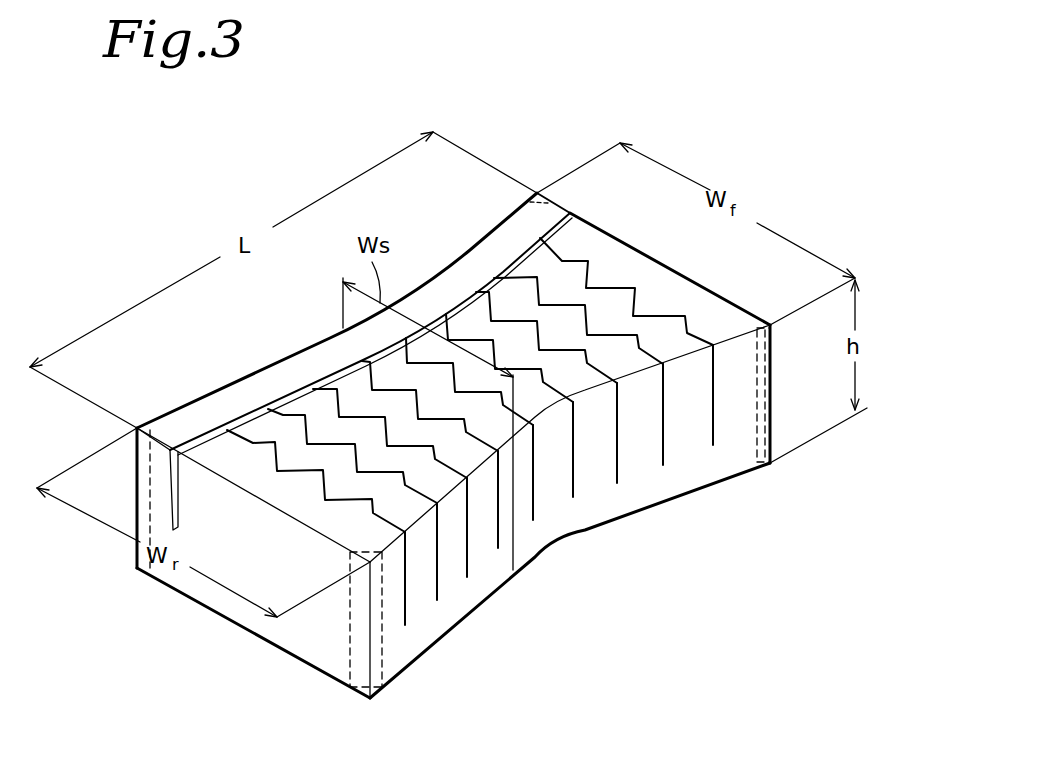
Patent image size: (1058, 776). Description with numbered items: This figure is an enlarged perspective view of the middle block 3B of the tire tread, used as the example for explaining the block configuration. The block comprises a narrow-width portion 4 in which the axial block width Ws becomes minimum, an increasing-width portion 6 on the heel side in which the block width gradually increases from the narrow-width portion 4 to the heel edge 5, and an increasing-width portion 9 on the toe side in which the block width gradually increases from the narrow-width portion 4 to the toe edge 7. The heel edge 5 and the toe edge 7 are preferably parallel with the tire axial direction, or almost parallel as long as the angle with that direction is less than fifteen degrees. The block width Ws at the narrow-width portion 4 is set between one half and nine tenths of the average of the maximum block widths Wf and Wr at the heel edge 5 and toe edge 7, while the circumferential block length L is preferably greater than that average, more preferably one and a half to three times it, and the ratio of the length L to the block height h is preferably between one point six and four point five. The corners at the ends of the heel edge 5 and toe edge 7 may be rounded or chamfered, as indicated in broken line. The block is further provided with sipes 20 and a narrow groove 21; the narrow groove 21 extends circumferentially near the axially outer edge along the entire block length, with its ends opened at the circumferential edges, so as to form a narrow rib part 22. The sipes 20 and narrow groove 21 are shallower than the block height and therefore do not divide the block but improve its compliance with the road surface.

The middle block 3B is at (165, 347).
The narrow-width portion 4 is at (558, 558).
The heel edge 5 is at (718, 293).
The increasing-width portion on the block heel-side 6 is at (688, 465).
The toe edge 7 is at (323, 538).
The increasing-width portion on the block toe-side 9 is at (458, 588).
The sipes 20 is at (617, 288).
The narrow groove 21 is at (493, 270).
The narrow rib part 22 is at (458, 262).